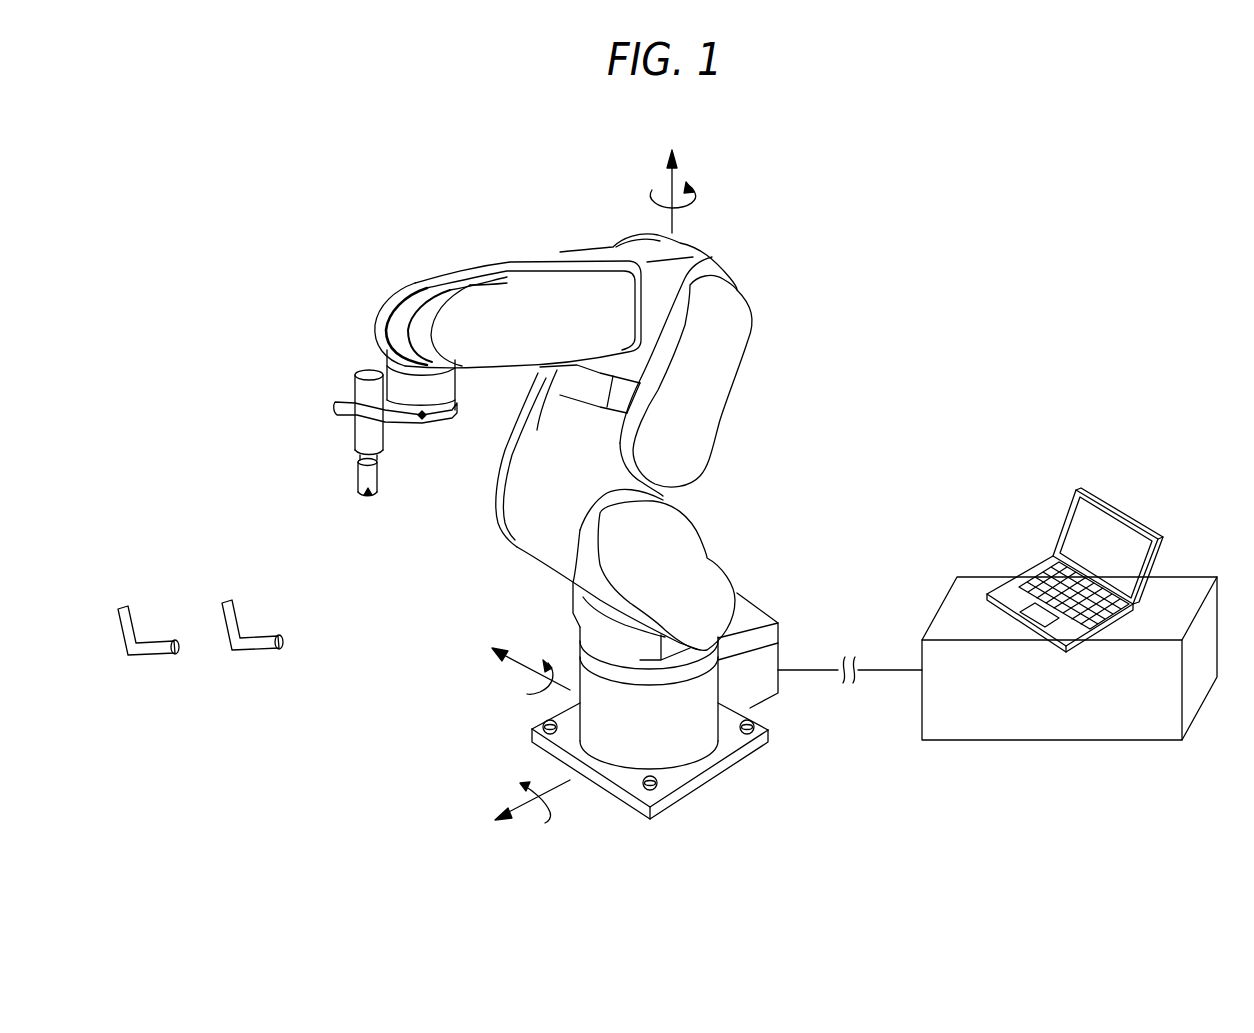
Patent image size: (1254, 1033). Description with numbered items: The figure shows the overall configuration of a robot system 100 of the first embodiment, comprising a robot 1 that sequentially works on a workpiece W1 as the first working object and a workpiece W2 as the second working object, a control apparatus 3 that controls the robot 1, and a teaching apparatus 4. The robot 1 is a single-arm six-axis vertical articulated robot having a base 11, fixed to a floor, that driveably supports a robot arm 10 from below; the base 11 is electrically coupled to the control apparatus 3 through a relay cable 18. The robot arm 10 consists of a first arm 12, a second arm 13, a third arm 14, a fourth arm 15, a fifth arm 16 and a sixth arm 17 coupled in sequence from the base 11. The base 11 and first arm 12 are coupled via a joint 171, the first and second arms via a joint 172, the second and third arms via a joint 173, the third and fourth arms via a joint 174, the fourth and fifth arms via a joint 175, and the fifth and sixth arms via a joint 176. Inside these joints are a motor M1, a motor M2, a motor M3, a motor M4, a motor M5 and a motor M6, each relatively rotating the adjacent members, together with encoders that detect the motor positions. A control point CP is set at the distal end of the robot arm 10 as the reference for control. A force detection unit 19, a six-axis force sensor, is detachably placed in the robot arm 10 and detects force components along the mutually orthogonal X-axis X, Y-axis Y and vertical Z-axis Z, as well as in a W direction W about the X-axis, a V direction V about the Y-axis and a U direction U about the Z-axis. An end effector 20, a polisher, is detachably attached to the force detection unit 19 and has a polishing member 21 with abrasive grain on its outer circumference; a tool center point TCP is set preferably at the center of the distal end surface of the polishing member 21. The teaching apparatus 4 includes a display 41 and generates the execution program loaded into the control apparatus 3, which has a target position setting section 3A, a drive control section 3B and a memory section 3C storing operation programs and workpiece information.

The robot system 100 is at (1118, 223).
The robot 1 is at (816, 229).
The robot arm 10 is at (750, 289).
The base 11 is at (648, 745).
The first arm 12 is at (727, 594).
The second arm 13 is at (700, 435).
The third arm 14 is at (683, 245).
The fourth arm 15 is at (553, 290).
The fifth arm 16 is at (393, 294).
The sixth arm 17 is at (410, 368).
The joint 171 is at (580, 627).
The joint 172 is at (497, 507).
The joint 173 is at (717, 254).
The joint 174 is at (612, 248).
The joint 175 is at (418, 282).
The joint 176 is at (457, 366).
The relay cable 18 is at (885, 675).
The force detection unit 19 is at (458, 410).
The end effector 20 is at (355, 433).
The polishing member 21 is at (378, 484).
The control apparatus 3 is at (1182, 575).
The target position setting section 3A is at (980, 706).
The drive control section 3B is at (1040, 706).
The memory section 3C is at (1102, 706).
The teaching apparatus 4 is at (1075, 548).
The display 41 is at (1083, 540).
The motor M1 is at (688, 710).
The motor M2 is at (678, 575).
The motor M3 is at (672, 467).
The motor M4 is at (656, 295).
The motor M5 is at (537, 318).
The motor M6 is at (385, 312).
The tool center point TCP is at (366, 497).
The control point CP is at (423, 420).
The X-axis X is at (526, 663).
The Y-axis Y is at (523, 811).
The Z-axis Z is at (671, 182).
The U direction U is at (698, 186).
The V direction V is at (553, 810).
The W direction W is at (532, 690).
The workpiece W1 is at (262, 648).
The workpiece W2 is at (157, 653).